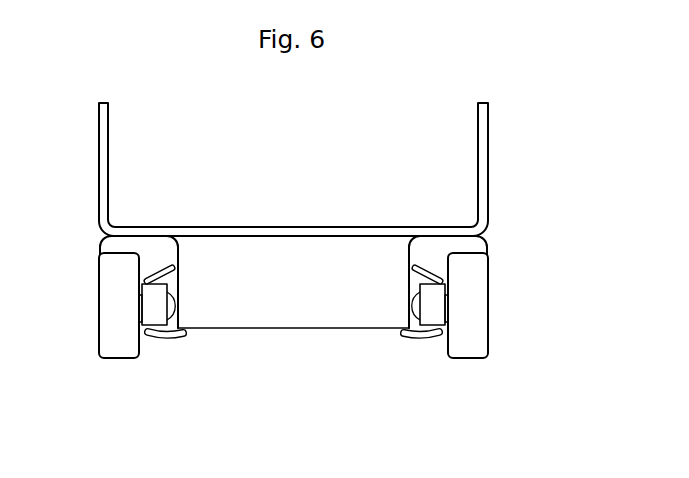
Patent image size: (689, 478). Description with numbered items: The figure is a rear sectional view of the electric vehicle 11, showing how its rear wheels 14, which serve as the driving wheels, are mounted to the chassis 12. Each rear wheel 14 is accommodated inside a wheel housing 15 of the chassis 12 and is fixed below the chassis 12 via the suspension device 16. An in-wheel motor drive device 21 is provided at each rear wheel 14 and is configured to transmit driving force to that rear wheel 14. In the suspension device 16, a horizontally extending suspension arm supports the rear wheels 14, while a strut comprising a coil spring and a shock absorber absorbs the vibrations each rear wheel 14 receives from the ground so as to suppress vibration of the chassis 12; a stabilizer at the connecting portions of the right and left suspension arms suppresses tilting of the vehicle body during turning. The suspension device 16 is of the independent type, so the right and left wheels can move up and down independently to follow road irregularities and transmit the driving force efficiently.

The electric vehicle 11 is at (319, 253).
The chassis 12 is at (137, 158).
The rear wheel 14 is at (112, 318).
The wheel housing 15 is at (117, 244).
The suspension device 16 is at (295, 310).
The in-wheel motor drive device 21 is at (160, 314).